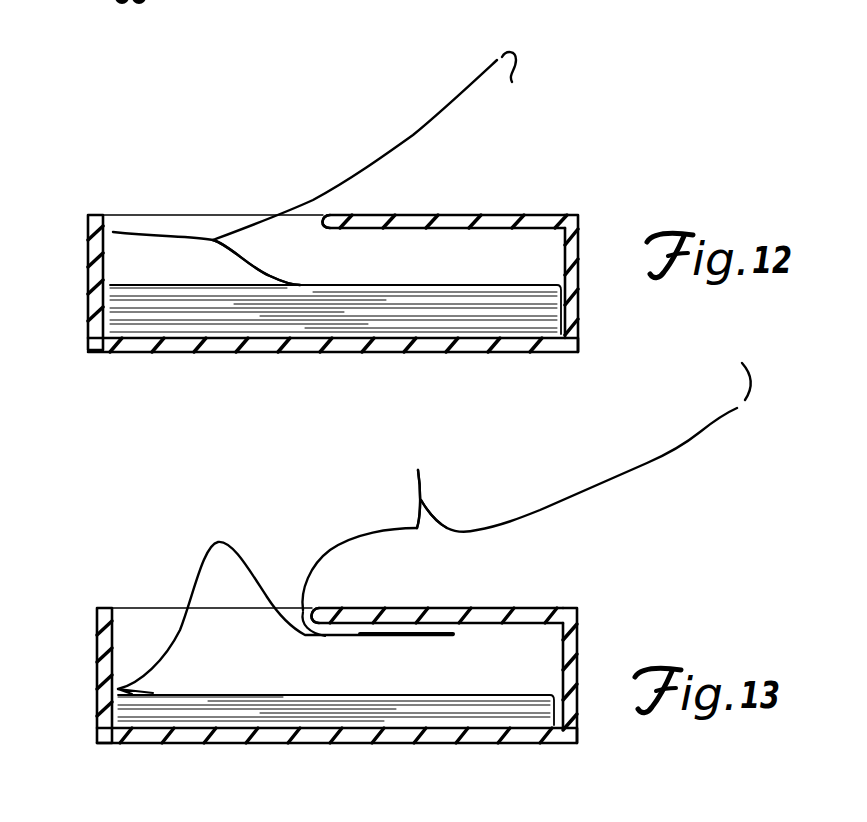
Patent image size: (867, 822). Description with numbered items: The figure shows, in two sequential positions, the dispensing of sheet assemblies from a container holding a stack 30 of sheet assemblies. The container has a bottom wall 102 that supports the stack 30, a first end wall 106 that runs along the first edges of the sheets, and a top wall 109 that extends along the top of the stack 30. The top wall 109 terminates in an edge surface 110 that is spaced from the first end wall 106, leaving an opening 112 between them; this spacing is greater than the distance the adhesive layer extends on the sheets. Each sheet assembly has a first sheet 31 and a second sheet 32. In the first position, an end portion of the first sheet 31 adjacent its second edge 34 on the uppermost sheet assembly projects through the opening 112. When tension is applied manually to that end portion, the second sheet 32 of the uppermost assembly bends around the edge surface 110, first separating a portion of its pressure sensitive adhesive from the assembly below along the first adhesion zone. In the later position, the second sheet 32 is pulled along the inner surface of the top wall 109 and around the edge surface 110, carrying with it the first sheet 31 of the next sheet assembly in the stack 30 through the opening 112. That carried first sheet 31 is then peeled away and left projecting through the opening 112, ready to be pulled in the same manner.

In FIG. 12, the stack of sheet assemblies 30 is at (185, 310).
In FIG. 13, the stack of sheet assemblies 30 is at (190, 707).
In FIG. 12, the first sheet 31 is at (413, 137).
In FIG. 13, the first sheet 31 is at (283, 617).
In FIG. 12, the second sheet 32 is at (259, 267).
In FIG. 13, the second sheet 32 is at (420, 534).
In FIG. 12, the second edge 34 is at (512, 82).
In FIG. 13, the second edge 34 is at (742, 362).
In FIG. 12, the bottom wall 102 is at (333, 352).
In FIG. 13, the bottom wall 102 is at (331, 745).
In FIG. 12, the first end wall 106 is at (88, 250).
In FIG. 13, the first end wall 106 is at (97, 625).
In FIG. 12, the top wall 109 is at (520, 214).
In FIG. 13, the top wall 109 is at (557, 608).
In FIG. 12, the edge surface 110 is at (325, 222).
In FIG. 13, the edge surface 110 is at (320, 624).
In FIG. 12, the opening 112 is at (118, 227).
In FIG. 13, the opening 112 is at (129, 627).